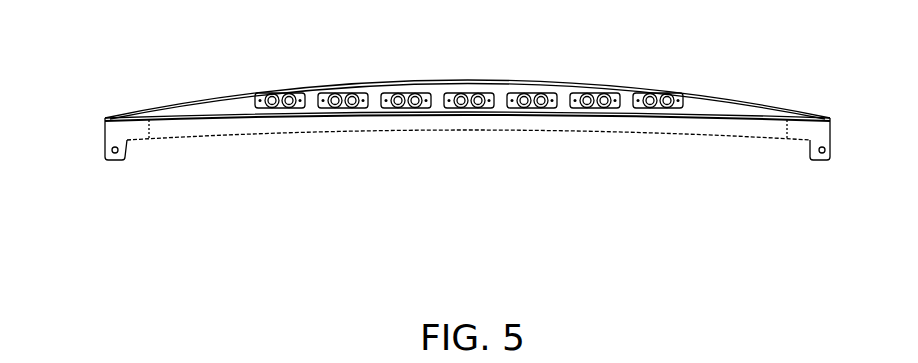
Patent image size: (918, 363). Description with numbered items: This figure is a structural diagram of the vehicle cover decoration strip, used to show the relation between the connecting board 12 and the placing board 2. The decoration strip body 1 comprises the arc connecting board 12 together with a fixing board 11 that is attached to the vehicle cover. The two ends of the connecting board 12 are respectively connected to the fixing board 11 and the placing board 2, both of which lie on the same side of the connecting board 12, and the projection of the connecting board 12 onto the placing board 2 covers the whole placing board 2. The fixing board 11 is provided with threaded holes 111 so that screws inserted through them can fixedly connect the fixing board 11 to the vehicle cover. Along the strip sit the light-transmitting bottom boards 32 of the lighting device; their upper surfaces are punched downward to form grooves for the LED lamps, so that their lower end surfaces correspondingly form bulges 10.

The decoration strip body 1 is at (167, 190).
The fixing board 11 is at (227, 127).
The connecting board 12 is at (312, 115).
The threaded hole 111 is at (123, 142).
The placing board 2 is at (723, 80).
The bulge 10 is at (295, 90).
The bottom board 32 is at (262, 92).